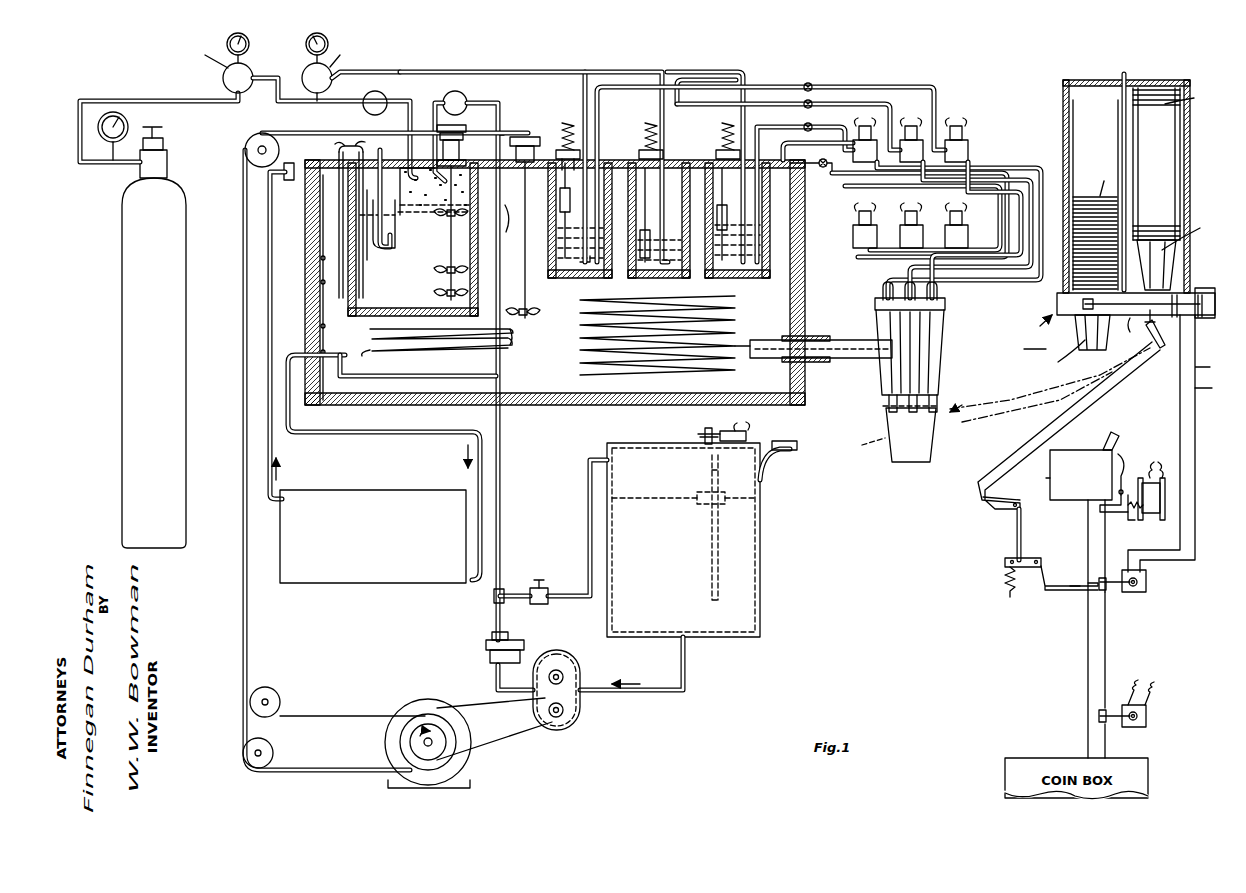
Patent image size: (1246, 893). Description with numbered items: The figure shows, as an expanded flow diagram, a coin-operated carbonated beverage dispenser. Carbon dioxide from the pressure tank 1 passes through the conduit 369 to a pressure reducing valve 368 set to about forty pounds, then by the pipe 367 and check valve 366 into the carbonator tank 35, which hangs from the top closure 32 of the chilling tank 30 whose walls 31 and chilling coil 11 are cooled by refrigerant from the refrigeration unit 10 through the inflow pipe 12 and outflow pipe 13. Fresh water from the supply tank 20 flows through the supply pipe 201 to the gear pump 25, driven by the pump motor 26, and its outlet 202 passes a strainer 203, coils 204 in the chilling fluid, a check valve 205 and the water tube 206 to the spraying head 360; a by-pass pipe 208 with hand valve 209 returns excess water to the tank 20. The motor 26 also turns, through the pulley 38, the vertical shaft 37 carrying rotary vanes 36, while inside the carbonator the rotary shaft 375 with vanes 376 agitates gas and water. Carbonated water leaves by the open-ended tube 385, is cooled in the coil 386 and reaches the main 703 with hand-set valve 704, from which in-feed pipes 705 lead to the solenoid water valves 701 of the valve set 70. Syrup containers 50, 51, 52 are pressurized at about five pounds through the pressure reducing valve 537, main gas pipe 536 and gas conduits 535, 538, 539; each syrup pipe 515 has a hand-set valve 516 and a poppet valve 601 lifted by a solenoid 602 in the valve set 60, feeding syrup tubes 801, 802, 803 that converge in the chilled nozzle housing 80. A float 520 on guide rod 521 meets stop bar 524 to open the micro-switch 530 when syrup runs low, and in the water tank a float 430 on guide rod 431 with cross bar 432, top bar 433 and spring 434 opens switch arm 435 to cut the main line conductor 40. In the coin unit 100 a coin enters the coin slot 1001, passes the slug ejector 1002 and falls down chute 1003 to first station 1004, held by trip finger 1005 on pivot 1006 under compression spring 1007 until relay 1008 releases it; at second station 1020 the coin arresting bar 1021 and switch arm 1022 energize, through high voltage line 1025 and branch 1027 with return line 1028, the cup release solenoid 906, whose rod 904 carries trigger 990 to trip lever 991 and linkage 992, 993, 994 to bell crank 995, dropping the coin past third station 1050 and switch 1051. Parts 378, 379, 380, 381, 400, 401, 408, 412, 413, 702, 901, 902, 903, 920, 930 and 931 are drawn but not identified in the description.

The pressure tank 1 is at (133, 248).
The refrigeration unit 10 is at (320, 575).
The chilling coil 11 is at (306, 250).
The inflow pipe 12 is at (272, 228).
The outflow pipe 13 is at (350, 434).
The fresh water supply tank 20 is at (745, 585).
The motor-driven pump unit 25 is at (575, 660).
The pump motor 26 is at (412, 700).
The chilling tank 30 is at (556, 420).
The bottom, end and side walls 31 is at (305, 313).
The top closure 32 is at (617, 160).
The carbonator tank 35 is at (321, 293).
The rotary vanes 36 is at (528, 318).
The vertical shaft 37 is at (524, 279).
The pulley 38 is at (526, 136).
The main line conductor 40 is at (1149, 74).
The syrup container 50 is at (591, 279).
The syrup container 51 is at (661, 279).
The syrup container 52 is at (720, 279).
The solenoid-operated time-control valves 60 is at (908, 100).
The electrically operated valves 70 is at (845, 250).
The chilled delivery nozzle unit 80 is at (958, 346).
The coin-controlled selective and sequence-determining unit 100 is at (1038, 630).
The water supply pipe 201 is at (637, 692).
The pump outlet 202 is at (503, 515).
The strainer 203 is at (487, 645).
The coils 204 is at (510, 346).
The check valve 205 is at (467, 99).
The water tube 206 is at (434, 104).
The by-pass pipe 208 is at (589, 543).
The hand controlled valve 209 is at (541, 585).
The spraying head 360 is at (392, 222).
The check valve 366 is at (366, 110).
The pipe 367 is at (368, 104).
The pressure reducing valve 368 is at (223, 78).
The conduit 369 is at (147, 98).
The rotary shaft 375 is at (446, 272).
The vanes 376 is at (446, 294).
The pulley 378 is at (466, 127).
The pulley 379 is at (463, 136).
The drive belt 380 is at (299, 130).
The pipe 381 is at (503, 135).
The open-ended tube 385 is at (348, 272).
The coil 386 is at (665, 352).
The float chamber 400 is at (396, 250).
The float tube 401 is at (393, 240).
The float rod 408 is at (368, 258).
The gas tube 412 is at (338, 153).
The gas tube fitting 413 is at (340, 145).
The float 430 is at (700, 505).
The guide rod 431 is at (712, 471).
The cross bar 432 is at (710, 604).
The top bar 433 is at (705, 432).
The light spring 434 is at (698, 436).
The switch arm 435 is at (731, 443).
The syrup pipe 515 is at (772, 125).
The hand-set valve 516 is at (812, 126).
The float 520 is at (570, 192).
The guide rod 521 is at (567, 233).
The stop bar 524 is at (590, 260).
The micro-switch 530 is at (566, 148).
The gas conduit 535 is at (583, 91).
The main gas pipe 536 is at (542, 70).
The pressure reducing valve 537 is at (352, 72).
The gas conduit 538 is at (668, 70).
The gas conduit 539 is at (740, 80).
The poppet valve 601 is at (968, 152).
The solenoid 602 is at (966, 132).
The solenoid-operated time-control valve 701 is at (968, 232).
The solenoid coil 702 is at (975, 200).
The main 703 is at (880, 176).
The hand-set valve 704 is at (828, 165).
The in-feed pipe 705 is at (853, 235).
The syrup tube 801 is at (1041, 170).
The syrup tube 802 is at (1031, 182).
The syrup tube 803 is at (1021, 194).
The cup path 901 is at (960, 410).
The cup 902 is at (916, 463).
The cup delivery plate 903 is at (1083, 302).
The cup release rod 904 is at (1152, 310).
The cup release solenoid 906 is at (1196, 292).
The cup magazine 920 is at (1190, 163).
The cup magazine 930 is at (1098, 108).
The magazine partition rod 931 is at (1122, 72).
The trigger 990 is at (1150, 330).
The pivoted lever 991 is at (1158, 345).
The linkage 992 is at (1022, 462).
The linkage 993 is at (992, 505).
The linkage 994 is at (1016, 529).
The bell crank 995 is at (1005, 563).
The coin slot 1001 is at (1106, 446).
The slug detecting and ejecting mechanism 1002 is at (1049, 484).
The coin chute 1003 is at (1087, 538).
The first station 1004 is at (1100, 508).
The trip finger 1005 is at (1124, 518).
The pivot 1006 is at (1121, 455).
The compression spring 1007 is at (1145, 514).
The relay 1008 is at (1165, 493).
The second coin station 1020 is at (1108, 592).
The coin arresting bar 1021 is at (1073, 590).
The switch arm 1022 is at (1135, 592).
The high voltage line 1025 is at (1196, 442).
The branch 1027 is at (1180, 391).
The return line 1028 is at (1197, 360).
The third station 1050 is at (1098, 718).
The switch 1051 is at (1133, 727).